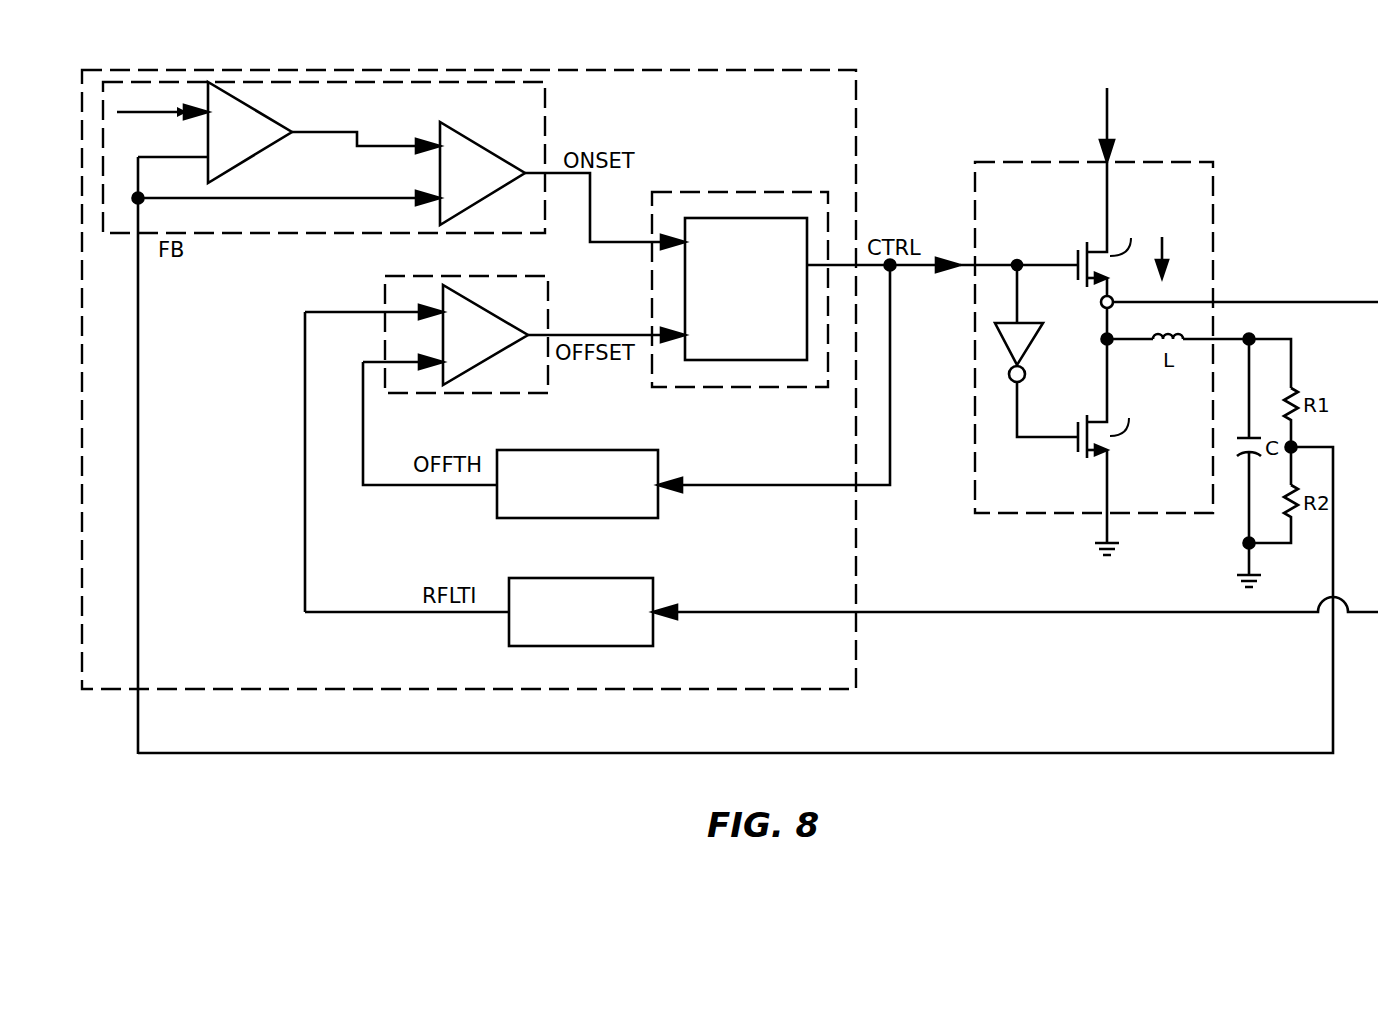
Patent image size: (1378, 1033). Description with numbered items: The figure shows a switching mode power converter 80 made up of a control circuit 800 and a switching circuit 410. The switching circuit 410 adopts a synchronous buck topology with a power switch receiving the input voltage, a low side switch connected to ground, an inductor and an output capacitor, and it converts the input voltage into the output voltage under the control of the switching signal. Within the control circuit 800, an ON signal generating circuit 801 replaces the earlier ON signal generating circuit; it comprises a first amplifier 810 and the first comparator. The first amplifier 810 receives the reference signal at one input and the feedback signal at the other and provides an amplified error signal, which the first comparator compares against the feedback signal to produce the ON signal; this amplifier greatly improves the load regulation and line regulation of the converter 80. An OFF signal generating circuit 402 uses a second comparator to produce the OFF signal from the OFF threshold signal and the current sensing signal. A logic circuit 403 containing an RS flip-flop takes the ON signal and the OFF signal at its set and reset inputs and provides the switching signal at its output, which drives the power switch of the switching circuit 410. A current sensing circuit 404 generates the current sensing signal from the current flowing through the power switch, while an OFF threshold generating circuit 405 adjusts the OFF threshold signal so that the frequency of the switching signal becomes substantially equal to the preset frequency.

The switching mode power converter 80 is at (1377, 103).
The control circuit 800 is at (926, 122).
The ON signal generating circuit 801 is at (348, 157).
The first amplifier 810 is at (250, 132).
The OFF signal generating circuit 402 is at (548, 288).
The logic circuit 403 is at (692, 387).
The current sensing circuit 404 is at (560, 646).
The OFF threshold generating circuit 405 is at (565, 518).
The switching circuit 410 is at (1213, 182).